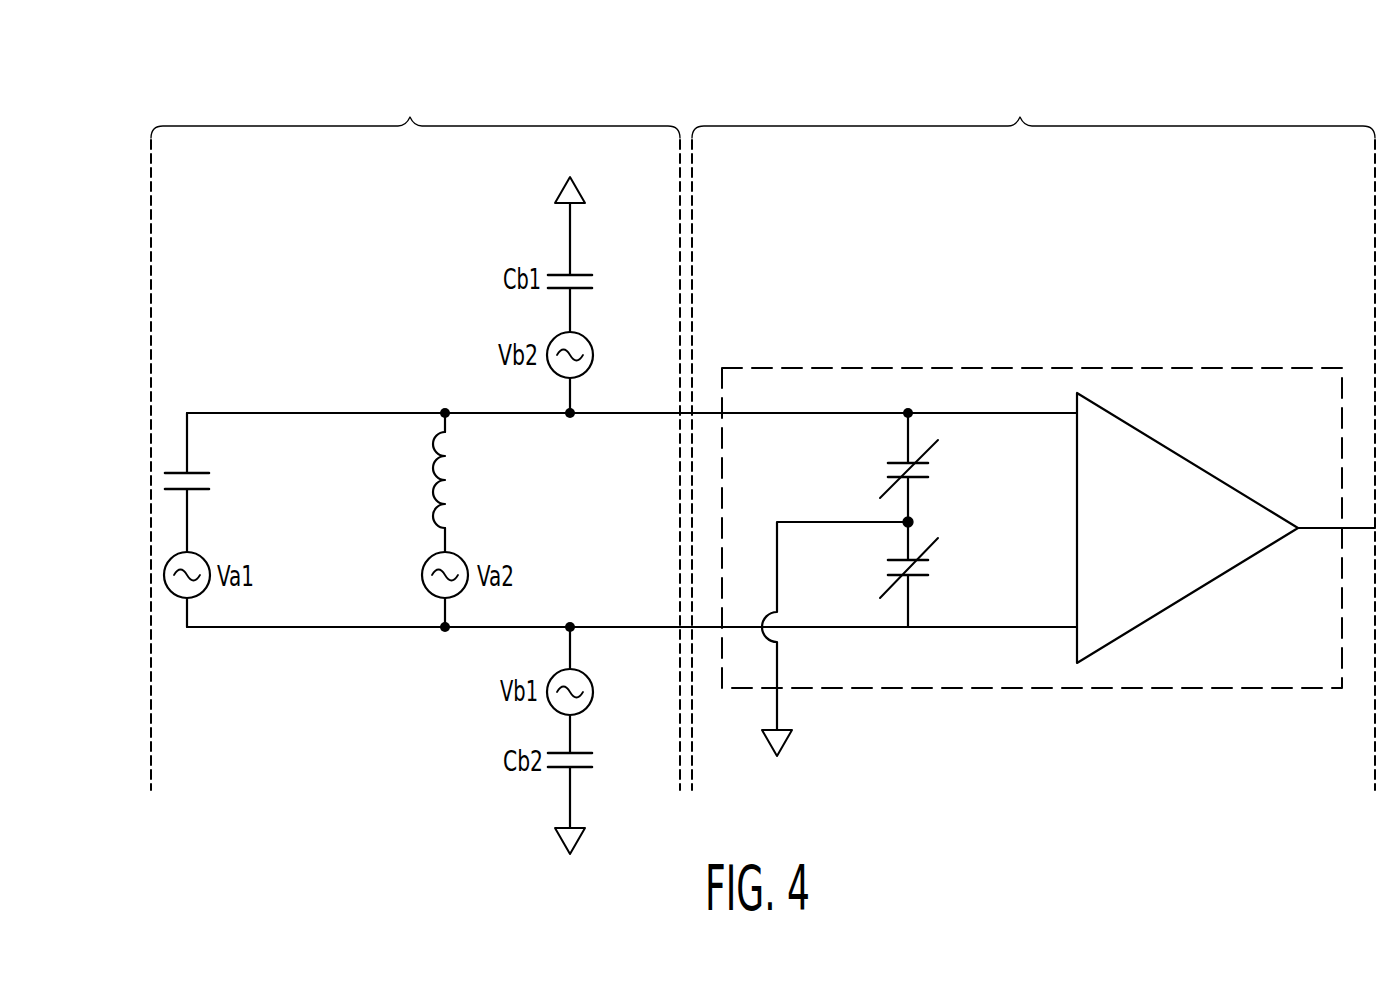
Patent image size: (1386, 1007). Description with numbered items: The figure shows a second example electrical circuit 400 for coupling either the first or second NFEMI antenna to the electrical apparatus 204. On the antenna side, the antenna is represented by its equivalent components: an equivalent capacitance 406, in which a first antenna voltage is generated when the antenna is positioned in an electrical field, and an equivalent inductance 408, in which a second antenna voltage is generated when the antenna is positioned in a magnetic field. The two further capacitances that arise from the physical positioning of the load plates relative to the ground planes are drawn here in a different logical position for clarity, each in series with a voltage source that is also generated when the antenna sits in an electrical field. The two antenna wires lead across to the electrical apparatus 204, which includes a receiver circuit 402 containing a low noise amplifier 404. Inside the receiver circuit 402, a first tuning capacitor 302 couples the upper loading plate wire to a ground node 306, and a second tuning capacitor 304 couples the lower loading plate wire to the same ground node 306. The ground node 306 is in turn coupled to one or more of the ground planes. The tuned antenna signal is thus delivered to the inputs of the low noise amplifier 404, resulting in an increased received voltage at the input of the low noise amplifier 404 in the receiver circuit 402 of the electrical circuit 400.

The electrical circuit 400 is at (117, 117).
The electrical apparatus 204 is at (1157, 93).
The equivalent capacitance 406 is at (253, 483).
The equivalent inductance 408 is at (485, 483).
The receiver circuit 402 is at (985, 368).
The LNA 404 is at (1202, 468).
The first tuning capacitor 302 is at (888, 465).
The second tuning capacitor 304 is at (888, 573).
The ground node 306 is at (915, 522).